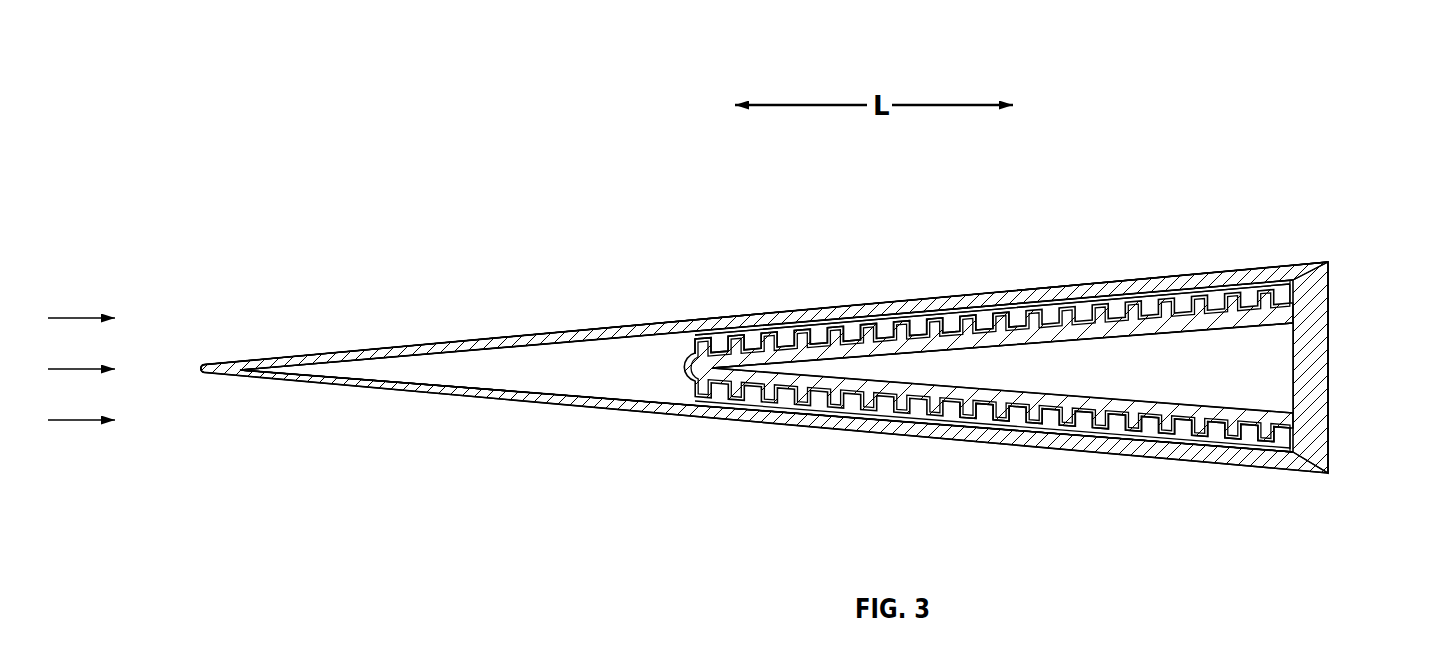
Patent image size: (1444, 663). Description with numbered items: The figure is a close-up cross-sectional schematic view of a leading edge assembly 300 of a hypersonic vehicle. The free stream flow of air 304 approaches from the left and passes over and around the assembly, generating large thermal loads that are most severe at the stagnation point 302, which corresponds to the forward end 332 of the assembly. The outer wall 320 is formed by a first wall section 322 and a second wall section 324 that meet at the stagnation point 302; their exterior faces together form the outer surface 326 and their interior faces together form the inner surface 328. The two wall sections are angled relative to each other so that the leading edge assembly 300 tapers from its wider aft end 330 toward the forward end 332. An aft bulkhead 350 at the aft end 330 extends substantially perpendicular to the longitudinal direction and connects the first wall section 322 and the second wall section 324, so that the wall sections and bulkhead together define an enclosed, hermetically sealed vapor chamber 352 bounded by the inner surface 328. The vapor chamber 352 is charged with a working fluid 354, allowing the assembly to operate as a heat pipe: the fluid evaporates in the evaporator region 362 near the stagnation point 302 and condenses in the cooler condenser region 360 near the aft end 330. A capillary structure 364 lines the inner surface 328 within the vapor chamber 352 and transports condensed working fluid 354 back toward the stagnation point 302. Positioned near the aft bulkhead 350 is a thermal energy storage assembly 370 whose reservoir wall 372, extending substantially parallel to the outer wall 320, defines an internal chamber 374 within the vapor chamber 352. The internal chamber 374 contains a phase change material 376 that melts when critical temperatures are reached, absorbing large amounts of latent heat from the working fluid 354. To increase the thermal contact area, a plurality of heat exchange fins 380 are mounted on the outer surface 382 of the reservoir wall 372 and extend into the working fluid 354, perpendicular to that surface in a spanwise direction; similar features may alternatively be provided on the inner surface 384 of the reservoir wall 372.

The leading edge assembly 300 is at (513, 143).
The stagnation point 302 is at (197, 367).
The free stream flow of air 304 is at (73, 422).
The outer wall 320 is at (617, 325).
The first wall section 322 is at (538, 333).
The second wall section 324 is at (565, 403).
The outer surface 326 is at (417, 345).
The inner surface 328 is at (438, 357).
The aft end 330 is at (1324, 205).
The forward end 332 is at (203, 412).
The aft bulkhead 350 is at (1322, 433).
The vapor chamber 352 is at (624, 383).
The working fluid 354 is at (490, 376).
The condenser region 360 is at (1248, 295).
The evaporator region 362 is at (318, 370).
The capillary structure 364 is at (673, 420).
The thermal energy storage assembly 370 is at (955, 330).
The reservoir wall 372 is at (892, 398).
The internal chamber 374 is at (1208, 381).
The phase change material 376 is at (1062, 370).
The heat exchange fins 380 is at (837, 333).
The outer surface of reservoir wall 382 is at (758, 346).
The inner surface of reservoir wall 384 is at (793, 357).